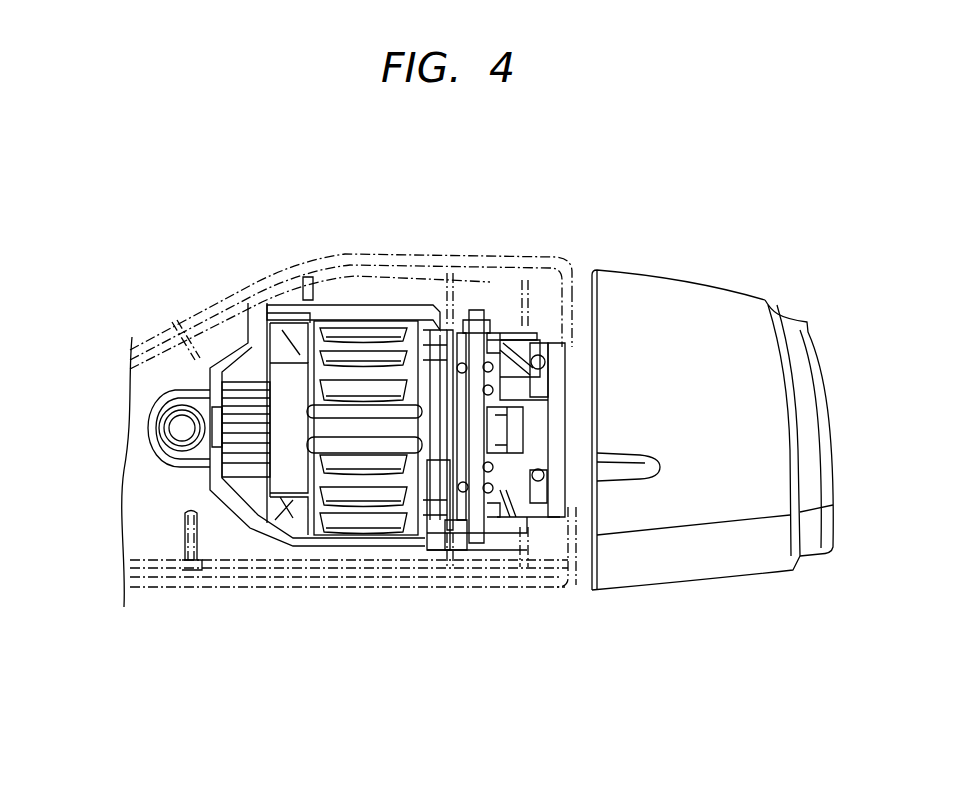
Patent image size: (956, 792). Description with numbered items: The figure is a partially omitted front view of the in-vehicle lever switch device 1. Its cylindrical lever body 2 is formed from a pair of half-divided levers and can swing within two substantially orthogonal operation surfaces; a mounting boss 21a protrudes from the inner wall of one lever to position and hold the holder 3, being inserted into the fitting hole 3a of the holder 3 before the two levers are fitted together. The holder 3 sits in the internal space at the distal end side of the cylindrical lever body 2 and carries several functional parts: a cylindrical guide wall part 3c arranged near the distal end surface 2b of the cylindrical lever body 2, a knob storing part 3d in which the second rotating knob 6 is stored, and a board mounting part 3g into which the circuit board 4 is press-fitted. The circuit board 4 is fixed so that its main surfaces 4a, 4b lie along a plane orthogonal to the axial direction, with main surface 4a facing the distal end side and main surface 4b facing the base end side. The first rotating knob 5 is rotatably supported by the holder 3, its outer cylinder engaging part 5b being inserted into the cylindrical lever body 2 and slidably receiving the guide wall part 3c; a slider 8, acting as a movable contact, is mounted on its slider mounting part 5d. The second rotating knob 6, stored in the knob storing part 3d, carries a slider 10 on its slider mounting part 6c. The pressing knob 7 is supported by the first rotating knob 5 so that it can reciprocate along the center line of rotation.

The in-vehicle lever switch device 1 is at (183, 292).
The cylindrical lever body 2 is at (265, 270).
The distal end surface 2b is at (584, 582).
The holder 3 is at (258, 528).
The fitting hole 3a is at (168, 442).
The guide wall part 3c is at (538, 388).
The knob storing part 3d is at (410, 318).
The board mounting part 3g is at (468, 470).
The circuit board 4 is at (478, 520).
The main surface 4a is at (500, 490).
The main surface 4b is at (440, 500).
The first rotating knob 5 is at (661, 290).
The outer cylinder engaging part 5b is at (551, 340).
The slider mounting part 5d is at (530, 512).
The second rotating knob 6 is at (365, 343).
The slider mounting part 6c is at (410, 540).
The pressing knob 7 is at (790, 326).
The slider 8 is at (490, 370).
The slider 10 is at (458, 366).
The mounting boss 21a is at (165, 428).